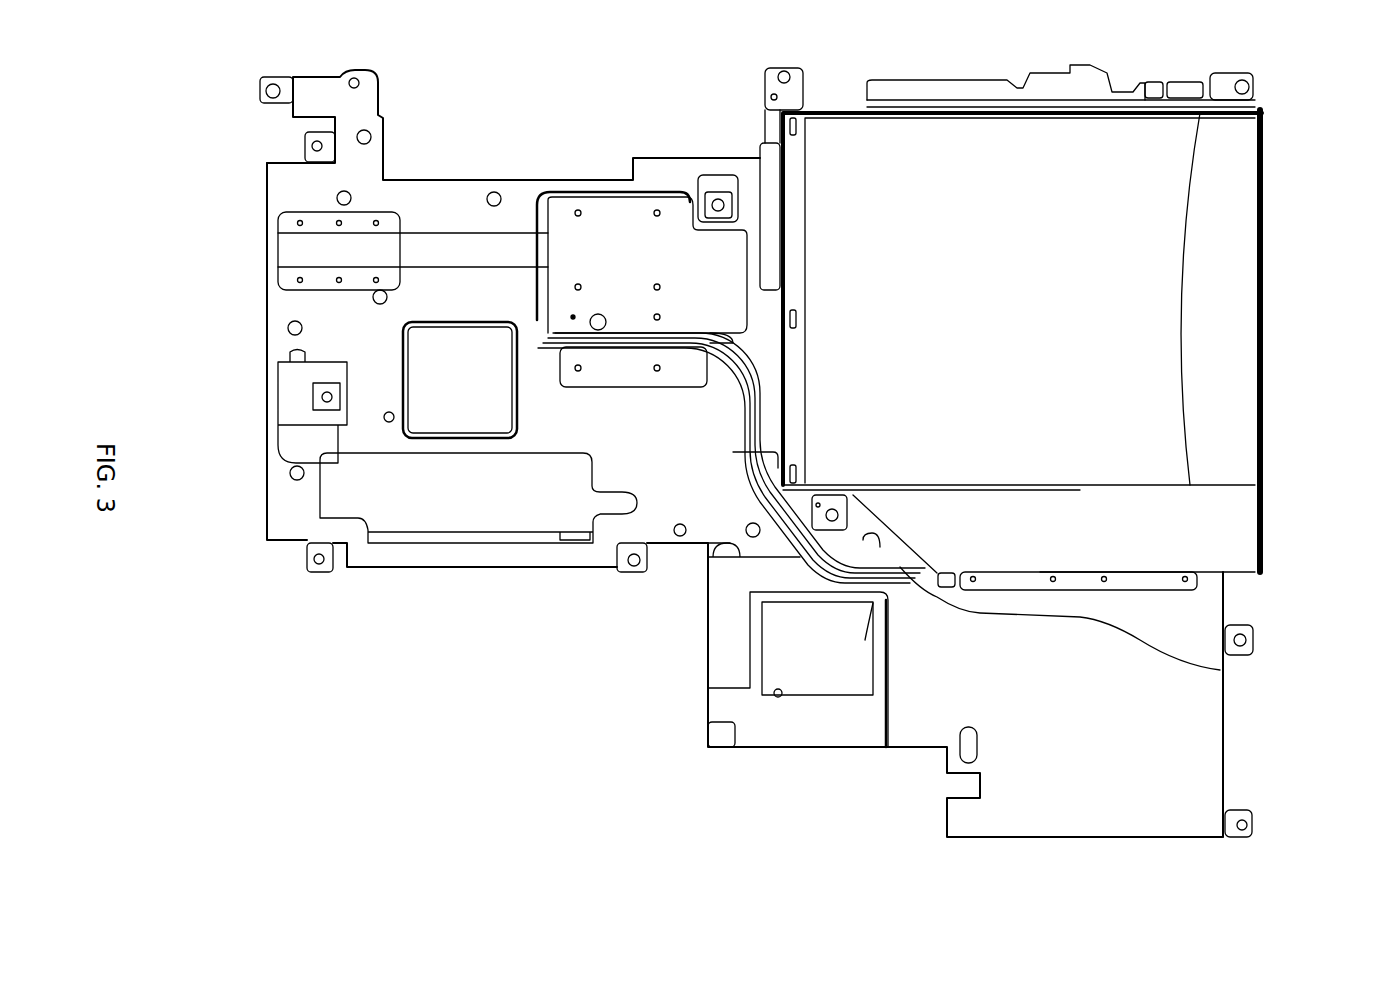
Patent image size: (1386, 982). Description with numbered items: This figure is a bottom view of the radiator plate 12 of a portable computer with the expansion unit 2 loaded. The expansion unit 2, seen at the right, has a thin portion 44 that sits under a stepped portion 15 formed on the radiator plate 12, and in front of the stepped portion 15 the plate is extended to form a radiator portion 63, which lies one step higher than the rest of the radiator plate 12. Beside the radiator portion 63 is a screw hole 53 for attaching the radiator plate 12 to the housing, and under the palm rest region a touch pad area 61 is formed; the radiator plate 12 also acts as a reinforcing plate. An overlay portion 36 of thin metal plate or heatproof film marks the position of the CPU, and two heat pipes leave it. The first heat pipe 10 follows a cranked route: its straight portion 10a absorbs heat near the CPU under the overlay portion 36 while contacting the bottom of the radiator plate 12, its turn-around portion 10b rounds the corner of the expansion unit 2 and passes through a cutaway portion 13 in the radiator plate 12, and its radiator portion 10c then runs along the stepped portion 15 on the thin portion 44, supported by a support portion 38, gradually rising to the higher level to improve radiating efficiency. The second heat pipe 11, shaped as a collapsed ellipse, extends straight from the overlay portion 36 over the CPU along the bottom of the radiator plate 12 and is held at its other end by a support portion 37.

The expansion unit 2 is at (1213, 230).
The first heat pipe 10 is at (747, 413).
The straight portion 10a is at (583, 340).
The turn-around portion 10b is at (837, 567).
The radiator portion 10c is at (1247, 670).
The second heat pipe 11 is at (462, 248).
The radiator plate 12 is at (290, 520).
The cutaway portion 13 is at (877, 545).
The stepped portion 15 is at (712, 562).
The overlay portion 36 is at (620, 210).
The support portion 37 is at (292, 253).
The support portion 38 is at (1200, 582).
The thin portion 44 is at (1233, 532).
The screw hole 53 is at (1242, 835).
The touch pad area 61 is at (780, 695).
The radiator portion 63 is at (1198, 777).